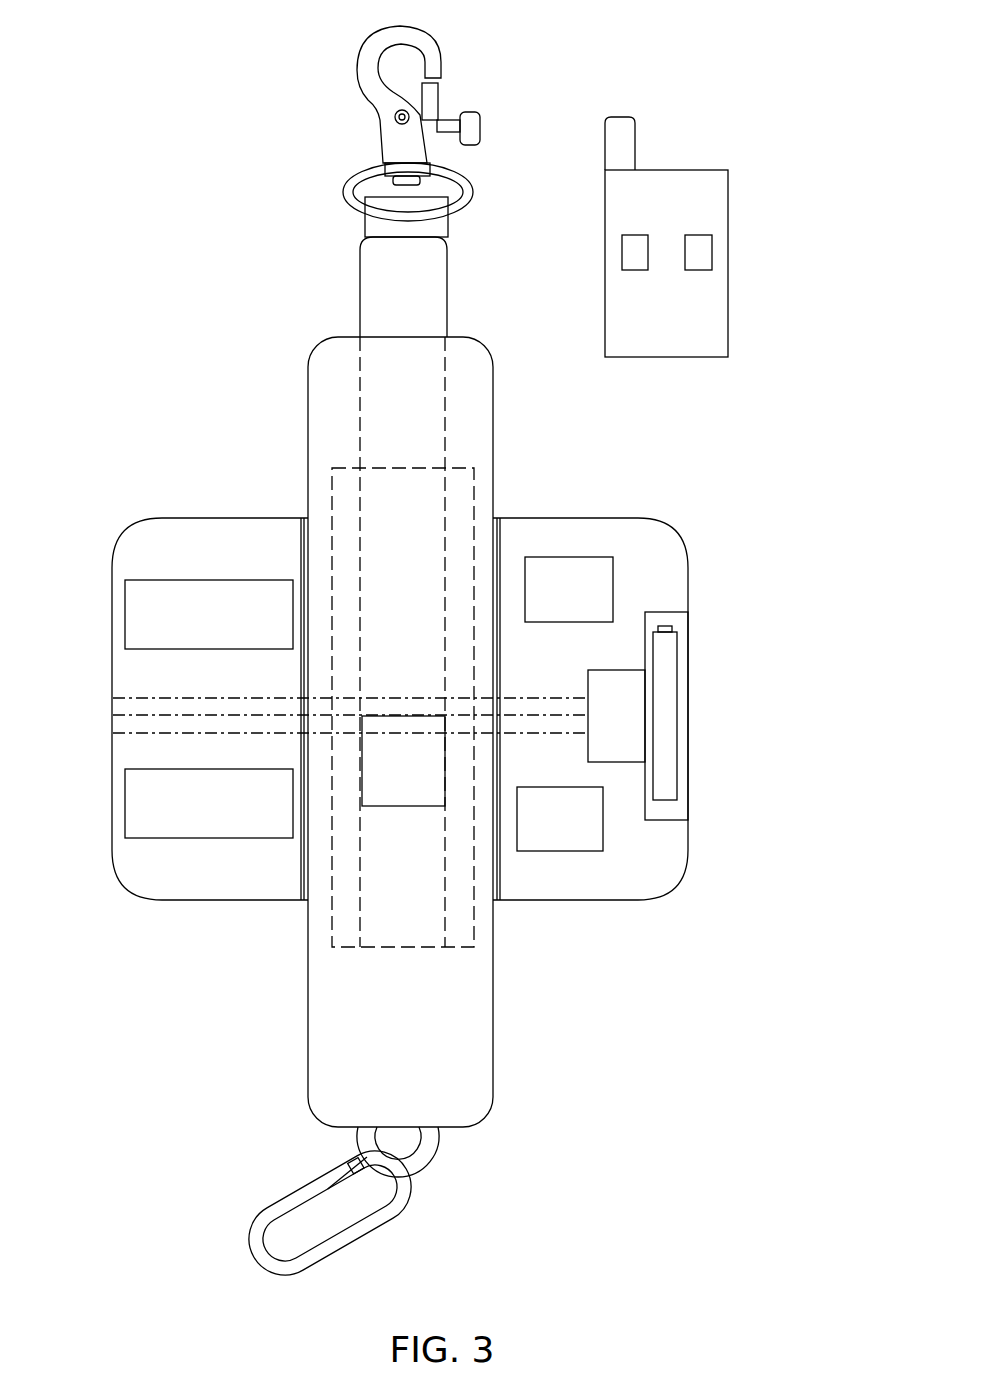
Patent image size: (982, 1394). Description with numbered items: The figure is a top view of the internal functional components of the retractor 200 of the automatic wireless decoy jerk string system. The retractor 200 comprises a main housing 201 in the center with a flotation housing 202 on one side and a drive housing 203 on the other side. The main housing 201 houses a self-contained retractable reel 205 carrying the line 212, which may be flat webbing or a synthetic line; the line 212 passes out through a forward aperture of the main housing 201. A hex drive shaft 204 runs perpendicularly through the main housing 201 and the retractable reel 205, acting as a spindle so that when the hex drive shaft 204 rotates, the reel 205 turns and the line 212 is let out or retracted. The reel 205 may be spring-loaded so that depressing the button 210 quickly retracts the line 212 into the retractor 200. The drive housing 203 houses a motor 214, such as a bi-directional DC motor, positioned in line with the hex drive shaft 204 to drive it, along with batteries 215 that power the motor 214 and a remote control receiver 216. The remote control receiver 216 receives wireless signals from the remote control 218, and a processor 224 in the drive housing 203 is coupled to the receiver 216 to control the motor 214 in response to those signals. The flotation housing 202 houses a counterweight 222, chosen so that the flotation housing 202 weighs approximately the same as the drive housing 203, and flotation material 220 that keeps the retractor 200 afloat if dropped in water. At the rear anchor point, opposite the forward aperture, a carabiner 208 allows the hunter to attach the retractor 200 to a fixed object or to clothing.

The retractor 200 is at (722, 73).
The main housing 201 is at (308, 972).
The flotation housing 202 is at (126, 535).
The drive housing 203 is at (668, 528).
The hex drive shaft 204 is at (690, 715).
The retractable reel 205 is at (408, 947).
The carabiner 208 is at (375, 1220).
The button 210 is at (403, 785).
The line 212 is at (424, 303).
The motor 214 is at (617, 762).
The batteries 215 is at (665, 670).
The remote control receiver 216 is at (559, 851).
The remote control 218 is at (710, 190).
The flotation material 220 is at (202, 838).
The counterweight 222 is at (202, 580).
The processor 224 is at (569, 557).